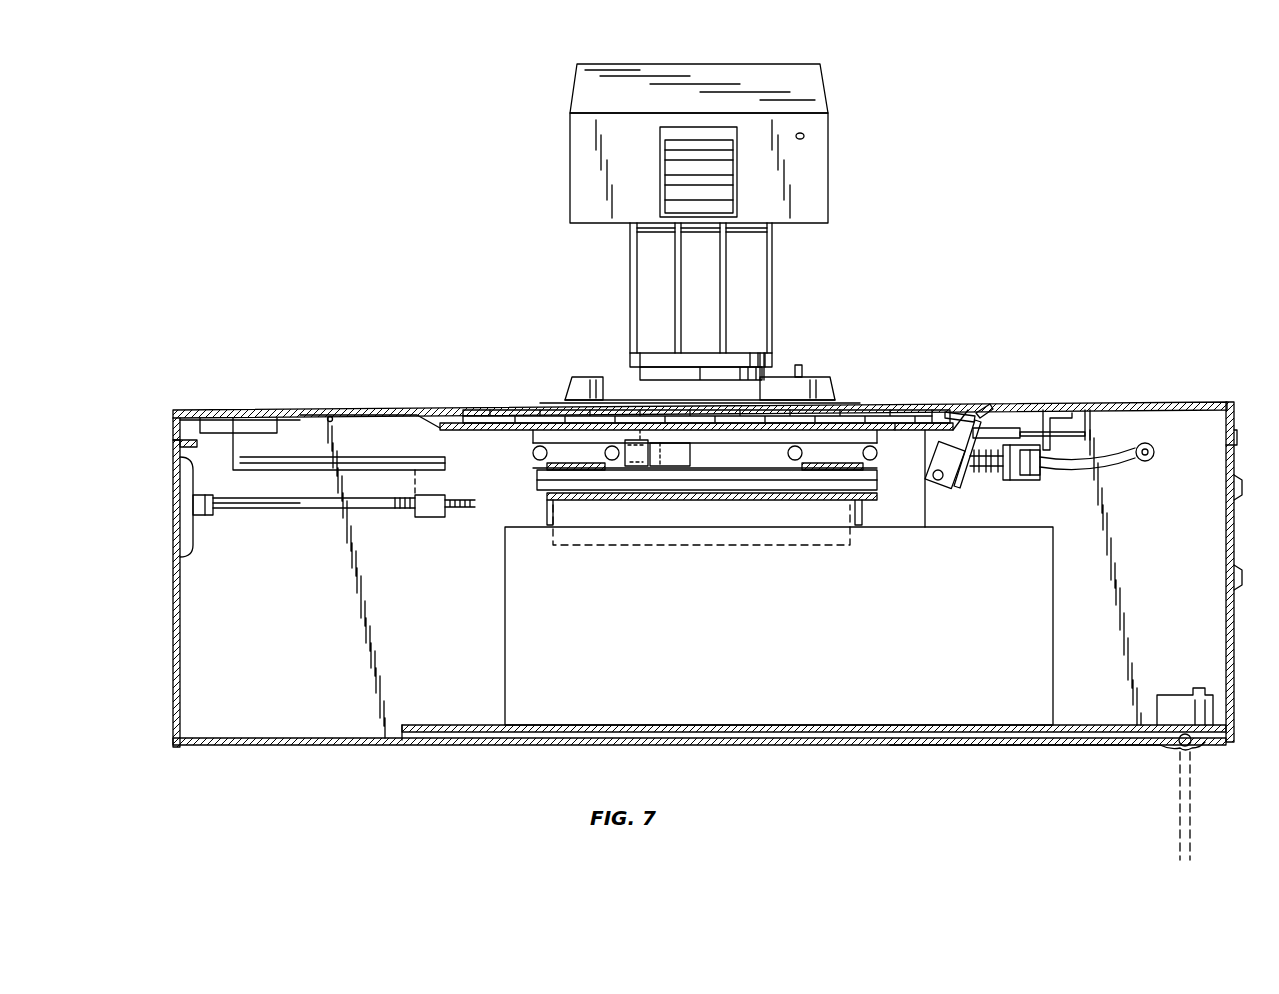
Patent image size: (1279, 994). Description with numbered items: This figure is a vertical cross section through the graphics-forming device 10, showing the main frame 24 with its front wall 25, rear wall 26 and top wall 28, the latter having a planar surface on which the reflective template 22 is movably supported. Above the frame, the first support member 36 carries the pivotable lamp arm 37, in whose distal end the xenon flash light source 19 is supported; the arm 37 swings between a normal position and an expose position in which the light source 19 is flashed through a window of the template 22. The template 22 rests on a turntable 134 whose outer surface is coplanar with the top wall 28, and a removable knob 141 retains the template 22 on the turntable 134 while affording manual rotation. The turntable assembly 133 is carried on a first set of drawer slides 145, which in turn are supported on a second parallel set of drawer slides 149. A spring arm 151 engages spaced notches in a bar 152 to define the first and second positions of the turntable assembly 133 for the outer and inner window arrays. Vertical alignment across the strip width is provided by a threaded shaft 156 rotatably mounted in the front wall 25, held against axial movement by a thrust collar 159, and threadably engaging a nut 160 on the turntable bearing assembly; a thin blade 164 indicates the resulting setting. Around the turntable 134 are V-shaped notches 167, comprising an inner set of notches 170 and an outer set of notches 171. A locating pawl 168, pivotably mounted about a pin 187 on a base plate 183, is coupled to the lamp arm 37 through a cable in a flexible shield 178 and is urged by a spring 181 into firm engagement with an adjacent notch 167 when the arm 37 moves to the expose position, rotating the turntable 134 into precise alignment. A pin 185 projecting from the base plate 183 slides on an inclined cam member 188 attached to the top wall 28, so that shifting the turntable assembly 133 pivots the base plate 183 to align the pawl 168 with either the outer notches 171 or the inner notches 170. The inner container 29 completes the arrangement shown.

The device 10 is at (465, 295).
The light source 19 is at (658, 156).
The template 22 is at (357, 410).
The main frame 24 is at (1230, 651).
The front wall 25 is at (171, 658).
The rear wall 26 is at (1235, 622).
The top wall 28 is at (330, 416).
The inner container 29 is at (800, 368).
The first support member 36 is at (577, 375).
The arm 37 is at (775, 268).
The turntable assembly 133 is at (772, 357).
The turntable 134 is at (877, 421).
The removable knob 141 is at (697, 352).
The first set of drawer slides 145 is at (533, 453).
The second parallel set of drawer slides 149 is at (876, 490).
The spring arm 151 is at (641, 467).
The bar 152 is at (690, 458).
The threaded shaft 156 is at (408, 514).
The thrust collar 159 is at (212, 517).
The nut 160 is at (428, 520).
The thin blade 164 is at (242, 450).
The V-shaped notches 167 is at (497, 412).
The locating pawl 168 is at (962, 412).
The inner set of notches 170 is at (900, 420).
The outer set of notches 171 is at (918, 420).
The flexible shield 178 is at (1110, 470).
The spring 181 is at (985, 472).
The base plate 183 is at (1018, 472).
The pin 185 is at (1090, 430).
The pin 187 is at (937, 480).
The cam member 188 is at (1062, 426).